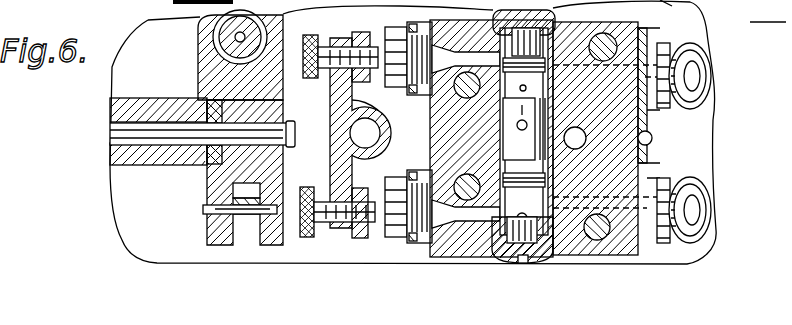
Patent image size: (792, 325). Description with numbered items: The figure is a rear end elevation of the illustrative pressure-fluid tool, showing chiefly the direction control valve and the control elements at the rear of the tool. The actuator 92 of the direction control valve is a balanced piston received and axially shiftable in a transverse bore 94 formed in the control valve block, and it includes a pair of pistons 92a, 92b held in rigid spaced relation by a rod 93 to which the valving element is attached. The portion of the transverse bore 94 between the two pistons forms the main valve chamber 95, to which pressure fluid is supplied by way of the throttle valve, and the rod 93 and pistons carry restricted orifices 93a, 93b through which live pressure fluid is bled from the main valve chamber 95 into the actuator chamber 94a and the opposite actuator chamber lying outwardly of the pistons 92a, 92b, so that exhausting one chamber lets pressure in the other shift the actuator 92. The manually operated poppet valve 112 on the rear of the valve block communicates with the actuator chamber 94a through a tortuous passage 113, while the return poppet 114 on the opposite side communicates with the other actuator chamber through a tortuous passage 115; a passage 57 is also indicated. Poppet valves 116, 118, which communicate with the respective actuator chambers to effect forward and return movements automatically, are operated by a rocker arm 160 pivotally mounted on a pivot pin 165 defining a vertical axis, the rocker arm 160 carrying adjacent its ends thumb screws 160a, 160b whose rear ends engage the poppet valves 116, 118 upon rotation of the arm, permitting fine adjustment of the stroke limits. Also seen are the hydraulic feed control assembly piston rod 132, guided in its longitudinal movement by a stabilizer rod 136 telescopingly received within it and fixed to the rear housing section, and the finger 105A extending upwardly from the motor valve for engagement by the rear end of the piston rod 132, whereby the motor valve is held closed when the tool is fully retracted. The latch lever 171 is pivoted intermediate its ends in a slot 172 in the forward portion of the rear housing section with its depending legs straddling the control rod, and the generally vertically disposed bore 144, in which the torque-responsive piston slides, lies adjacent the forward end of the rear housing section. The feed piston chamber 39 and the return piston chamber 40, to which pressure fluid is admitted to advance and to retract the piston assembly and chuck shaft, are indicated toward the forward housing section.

The bore 144 is at (214, 40).
The piston rod 132 is at (133, 104).
The stabilizer rod 136 is at (134, 162).
The finger 105A is at (209, 172).
The slot 172 is at (247, 225).
The latch lever 171 is at (302, 229).
The rocker arm 160 is at (337, 99).
The pivot pin 165 is at (335, 143).
The thumb screw 160b is at (350, 23).
The thumb screw 160a is at (306, 193).
The poppet valve 118 is at (377, 38).
The poppet valve 116 is at (374, 230).
The actuator 92 is at (498, 115).
The rod 93 is at (505, 135).
The restricted orifice 93a is at (500, 157).
The restricted orifice 93b is at (528, 122).
The transverse bore 94 is at (545, 45).
The actuator chamber 94a is at (530, 238).
The piston 92b is at (527, 88).
The piston 92a is at (545, 178).
The main valve chamber 95 is at (541, 167).
The passage 57 is at (583, 135).
The return poppet 114 is at (692, 78).
The tortuous passage 115 is at (678, 86).
The poppet valve 112 is at (690, 212).
The tortuous passage 113 is at (678, 218).
The feed piston chamber 39 is at (672, 6).
The return piston chamber 40 is at (768, 14).